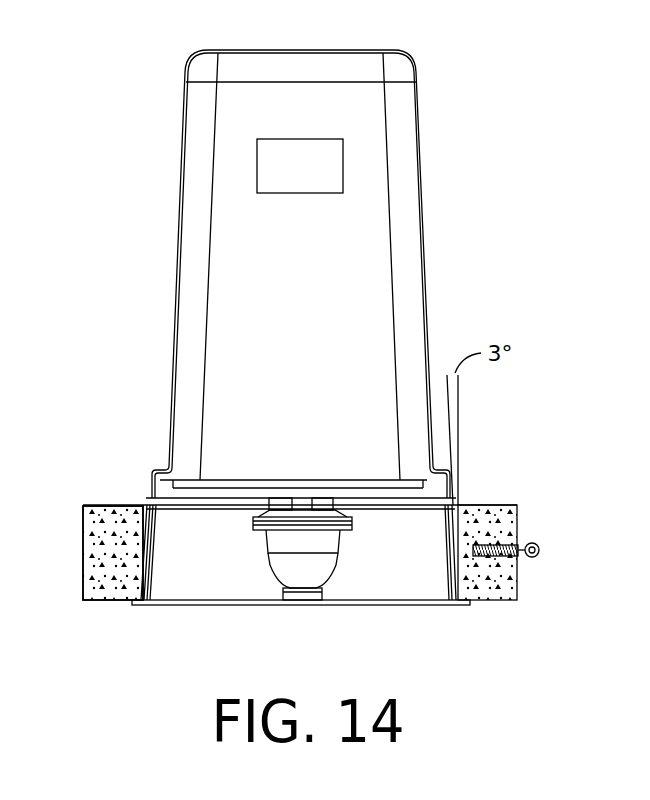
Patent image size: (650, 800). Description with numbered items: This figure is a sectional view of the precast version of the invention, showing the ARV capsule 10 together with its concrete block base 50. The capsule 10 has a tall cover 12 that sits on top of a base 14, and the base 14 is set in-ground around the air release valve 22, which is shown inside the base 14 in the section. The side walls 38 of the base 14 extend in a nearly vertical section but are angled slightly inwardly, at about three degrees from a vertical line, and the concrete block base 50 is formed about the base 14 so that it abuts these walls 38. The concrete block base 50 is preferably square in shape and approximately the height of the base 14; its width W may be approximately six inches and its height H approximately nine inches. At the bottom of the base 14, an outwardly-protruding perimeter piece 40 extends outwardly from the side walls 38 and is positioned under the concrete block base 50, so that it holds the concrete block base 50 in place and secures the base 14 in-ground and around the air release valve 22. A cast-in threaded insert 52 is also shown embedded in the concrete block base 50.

The ARV capsule 10 is at (419, 42).
The enclosure shell / cover 12 is at (422, 153).
The base 14 is at (300, 579).
The air release valve 22 is at (283, 567).
The side walls 38 is at (443, 553).
The outwardly-protruding perimeter piece 40 is at (457, 604).
The concrete block base 50 is at (91, 528).
The cast-in threaded insert 52 is at (540, 547).
The width W is at (118, 505).
The height H is at (82, 575).